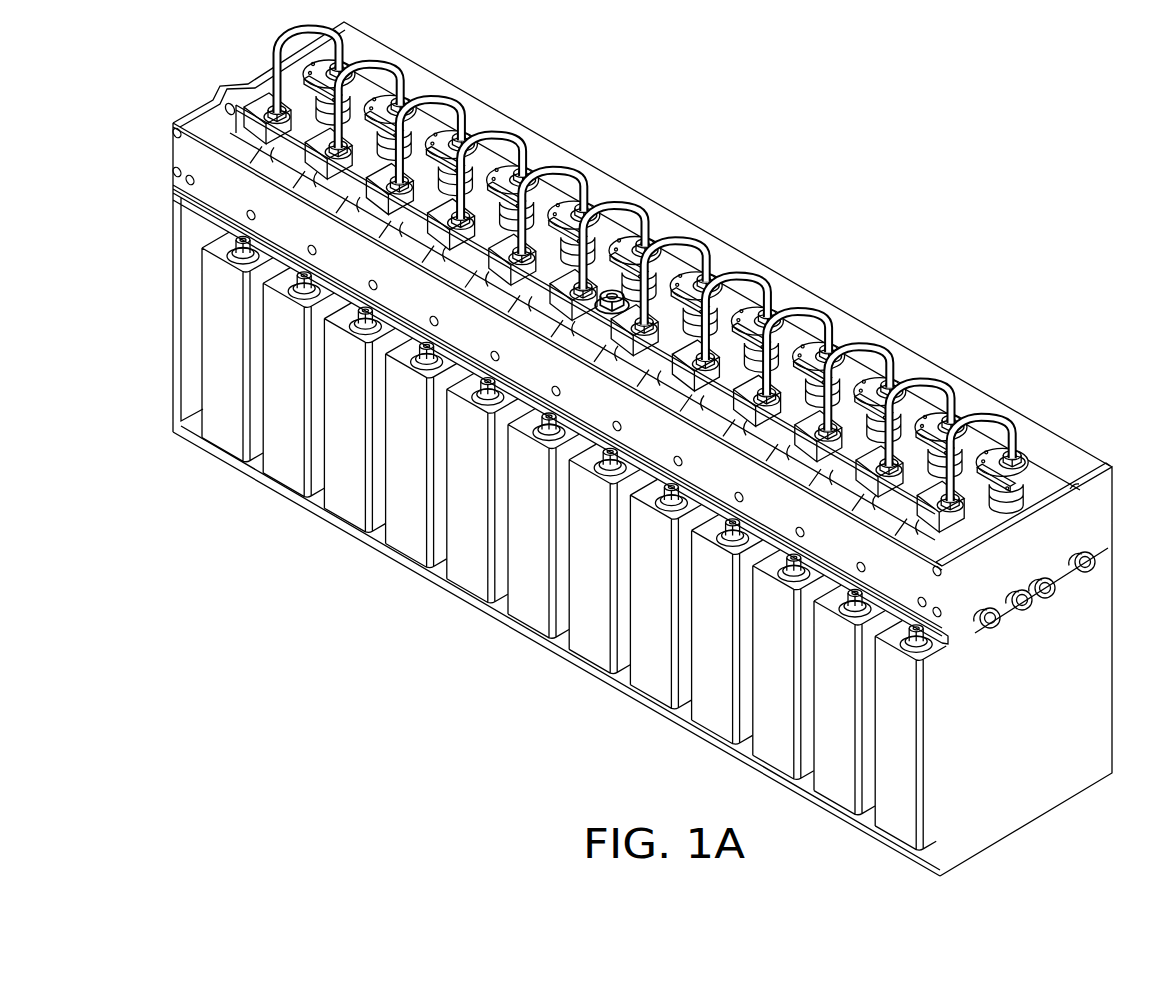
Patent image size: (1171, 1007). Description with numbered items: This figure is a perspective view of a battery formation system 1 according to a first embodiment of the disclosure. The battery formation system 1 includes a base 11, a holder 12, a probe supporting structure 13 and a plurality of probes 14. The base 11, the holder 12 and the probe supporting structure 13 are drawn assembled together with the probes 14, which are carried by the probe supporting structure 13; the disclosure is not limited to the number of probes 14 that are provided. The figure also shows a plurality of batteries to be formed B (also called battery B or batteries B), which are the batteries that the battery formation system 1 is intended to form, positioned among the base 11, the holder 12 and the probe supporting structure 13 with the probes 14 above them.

The battery formation system 1 is at (668, 449).
The base 11 is at (1098, 673).
The holder 12 is at (1098, 500).
The probe supporting structure 13 is at (921, 537).
The probe 14 is at (905, 385).
The battery to be formed B is at (470, 565).